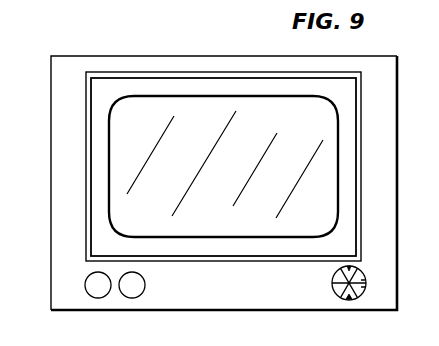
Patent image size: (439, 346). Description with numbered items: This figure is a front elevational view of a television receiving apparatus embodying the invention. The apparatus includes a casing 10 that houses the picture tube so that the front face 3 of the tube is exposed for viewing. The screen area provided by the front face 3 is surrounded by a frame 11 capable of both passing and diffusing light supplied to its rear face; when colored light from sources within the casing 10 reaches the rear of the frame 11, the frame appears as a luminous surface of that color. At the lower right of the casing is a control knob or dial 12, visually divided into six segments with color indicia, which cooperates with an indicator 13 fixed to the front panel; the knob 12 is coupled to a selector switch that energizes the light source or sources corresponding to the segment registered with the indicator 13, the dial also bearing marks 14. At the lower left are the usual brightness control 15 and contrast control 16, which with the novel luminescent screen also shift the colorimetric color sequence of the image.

The front face 3 is at (173, 99).
The casing 10 is at (43, 209).
The frame 11 is at (78, 166).
The control knob 12 is at (324, 276).
The indicator 13 is at (343, 259).
The dial index marks 14 is at (359, 277).
The brightness control 15 is at (90, 290).
The contrast control 16 is at (124, 290).